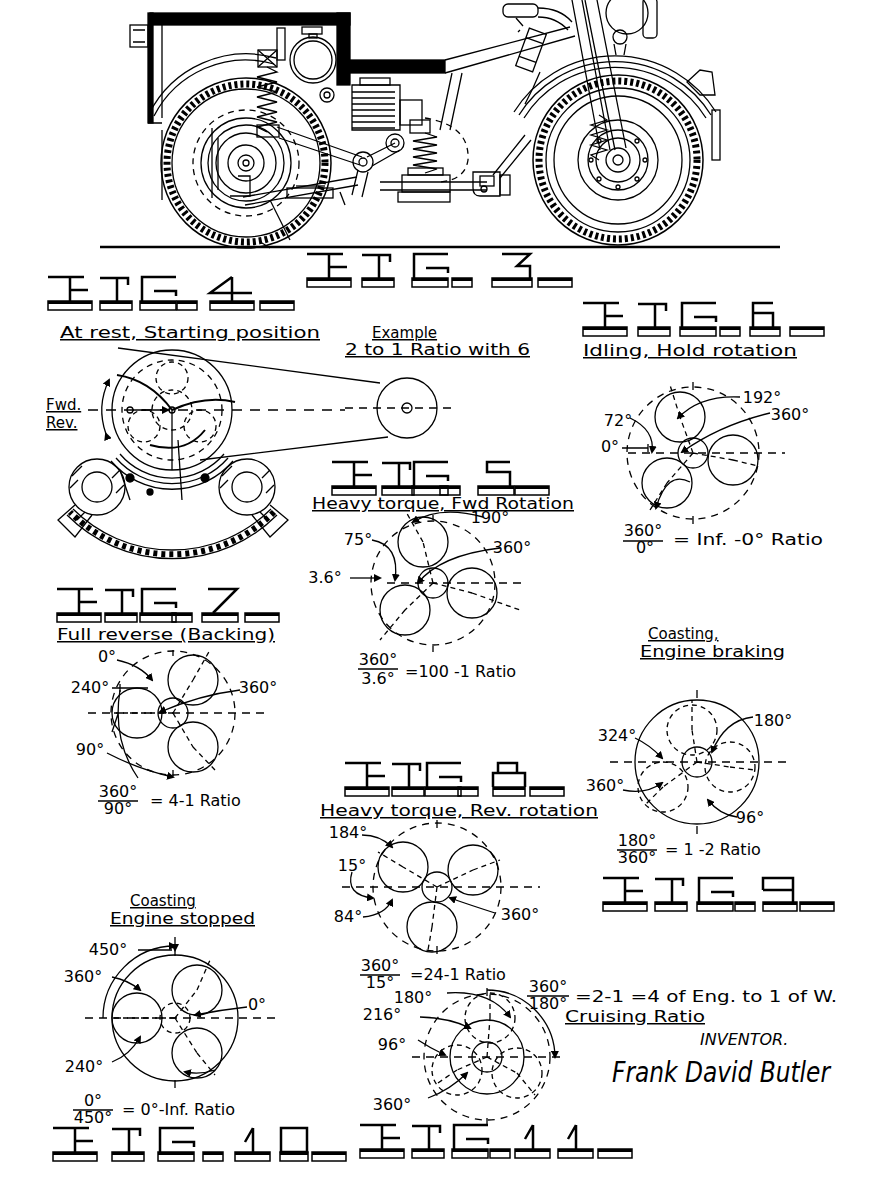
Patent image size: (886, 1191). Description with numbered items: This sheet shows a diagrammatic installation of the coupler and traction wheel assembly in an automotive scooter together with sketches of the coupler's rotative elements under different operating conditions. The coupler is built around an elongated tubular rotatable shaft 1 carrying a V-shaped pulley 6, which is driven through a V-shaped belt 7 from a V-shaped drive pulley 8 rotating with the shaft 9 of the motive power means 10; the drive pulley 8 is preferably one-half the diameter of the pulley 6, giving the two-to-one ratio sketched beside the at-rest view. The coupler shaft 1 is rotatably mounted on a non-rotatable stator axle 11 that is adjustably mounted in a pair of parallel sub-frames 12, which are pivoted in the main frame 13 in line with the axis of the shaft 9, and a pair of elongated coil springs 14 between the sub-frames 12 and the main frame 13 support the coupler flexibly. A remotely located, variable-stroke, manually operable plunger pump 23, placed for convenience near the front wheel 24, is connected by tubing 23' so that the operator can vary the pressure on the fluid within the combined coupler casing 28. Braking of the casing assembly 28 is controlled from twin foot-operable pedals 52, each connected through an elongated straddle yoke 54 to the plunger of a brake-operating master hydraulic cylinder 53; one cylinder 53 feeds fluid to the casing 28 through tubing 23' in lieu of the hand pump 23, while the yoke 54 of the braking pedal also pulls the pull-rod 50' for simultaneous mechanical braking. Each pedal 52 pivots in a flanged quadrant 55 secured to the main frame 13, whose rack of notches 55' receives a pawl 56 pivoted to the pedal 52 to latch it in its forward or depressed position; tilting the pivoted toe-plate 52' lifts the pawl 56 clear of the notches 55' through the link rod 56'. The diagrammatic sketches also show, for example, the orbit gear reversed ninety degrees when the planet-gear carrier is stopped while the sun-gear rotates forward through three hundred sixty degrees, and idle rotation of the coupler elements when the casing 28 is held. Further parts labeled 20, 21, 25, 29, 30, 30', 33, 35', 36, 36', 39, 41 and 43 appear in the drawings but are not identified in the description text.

In FIG. 4, the coupler shaft 1 is at (158, 432).
In FIG. 3, the V-shaped pulley 6 is at (235, 125).
In FIG. 4, the V-shaped pulley 6 is at (232, 408).
In FIG. 3, the V-shaped belt 7 is at (312, 146).
In FIG. 4, the V-shaped belt 7 is at (293, 368).
In FIG. 3, the V-shaped drive pulley 8 is at (370, 175).
In FIG. 4, the V-shaped drive pulley 8 is at (390, 402).
In FIG. 3, the shaft of the motive power means 9 is at (345, 207).
In FIG. 4, the shaft of the motive power means 9 is at (413, 404).
In FIG. 3, the motive power means 10 is at (362, 82).
In FIG. 3, the stator axle 11 is at (236, 150).
In FIG. 4, the stator axle 11 is at (166, 400).
In FIG. 3, the sub-frames 12 is at (280, 246).
In FIG. 3, the main frame 13 is at (366, 175).
In FIG. 3, the coil springs 14 is at (266, 250).
In FIG. 3, the axle 20 is at (228, 163).
In FIG. 3, the bearing 21 is at (220, 153).
In FIG. 3, the plunger pump 23 is at (513, 45).
In FIG. 3, the tubing 23' is at (512, 88).
In FIG. 3, the front wheel 24 is at (655, 178).
In FIG. 4, the lever arm 25 is at (135, 385).
In FIG. 3, the casing assembly 28 is at (230, 196).
In FIG. 4, the casing assembly 28 is at (215, 455).
In FIG. 4, the cam lever 29 is at (150, 380).
In FIG. 3, the brake shoe 30 is at (196, 163).
In FIG. 4, the brake shoe 30 is at (105, 498).
In FIG. 3, the brake shoe 30' is at (152, 167).
In FIG. 4, the brake shoe 30' is at (213, 498).
In FIG. 4, the central gear 33 is at (205, 412).
In FIG. 3, the tire 35' is at (246, 165).
In FIG. 4, the tire 35' is at (176, 486).
In FIG. 3, the toothed ring gear 36 is at (428, 161).
In FIG. 4, the toothed ring gear 36 is at (162, 503).
In FIG. 4, the ring gear segment 36' is at (136, 500).
In FIG. 4, the control link 39 is at (185, 372).
In FIG. 4, the planet gear 41 is at (215, 412).
In FIG. 4, the rotation arrows 43 is at (104, 383).
In FIG. 3, the pull-rod 50' is at (300, 198).
In FIG. 3, the foot operatable pedals 52 is at (433, 203).
In FIG. 3, the toe-plate 52' is at (507, 141).
In FIG. 3, the master hydraulic cylinder 53 is at (420, 195).
In FIG. 3, the straddle yoke 54 is at (432, 204).
In FIG. 3, the flanged quadrant 55 is at (486, 202).
In FIG. 3, the rack of notches 55' is at (514, 201).
In FIG. 3, the pawl 56 is at (447, 149).
In FIG. 3, the link rod 56' is at (488, 160).